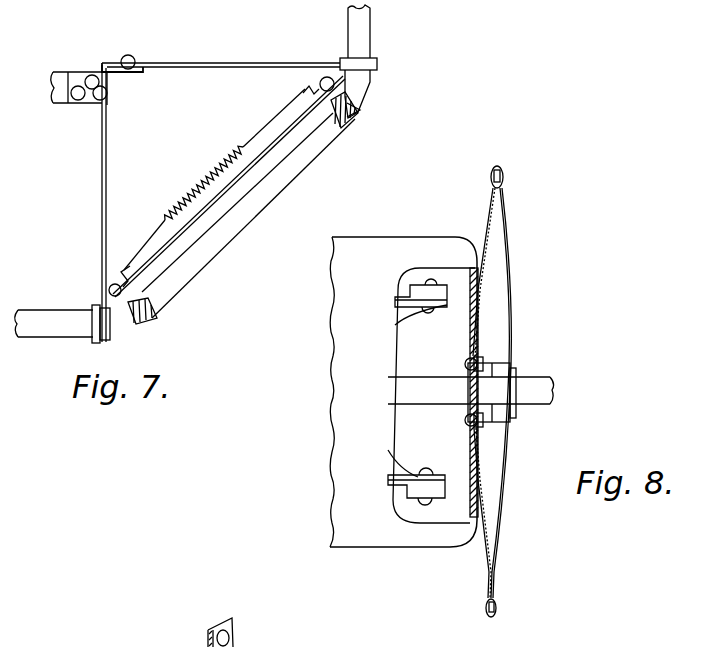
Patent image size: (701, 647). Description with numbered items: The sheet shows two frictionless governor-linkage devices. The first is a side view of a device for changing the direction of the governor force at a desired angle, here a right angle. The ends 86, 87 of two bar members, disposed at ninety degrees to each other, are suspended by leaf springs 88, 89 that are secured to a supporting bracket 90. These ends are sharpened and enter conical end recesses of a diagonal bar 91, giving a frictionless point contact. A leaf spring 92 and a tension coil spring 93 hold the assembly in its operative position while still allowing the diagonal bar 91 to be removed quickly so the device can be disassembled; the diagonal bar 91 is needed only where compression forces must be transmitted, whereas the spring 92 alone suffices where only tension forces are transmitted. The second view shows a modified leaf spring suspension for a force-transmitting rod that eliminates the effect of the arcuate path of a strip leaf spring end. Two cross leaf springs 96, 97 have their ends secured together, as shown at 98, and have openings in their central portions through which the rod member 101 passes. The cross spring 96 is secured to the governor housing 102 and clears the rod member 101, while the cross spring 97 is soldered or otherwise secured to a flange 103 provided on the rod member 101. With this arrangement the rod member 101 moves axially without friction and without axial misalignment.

In FIG. 7, the end of bar member 86 is at (120, 323).
In FIG. 7, the end of bar member 87 is at (360, 86).
In FIG. 7, the leaf spring 88 is at (102, 212).
In FIG. 7, the leaf spring 89 is at (220, 63).
In FIG. 7, the supporting bracket 90 is at (77, 72).
In FIG. 7, the diagonal bar 91 is at (289, 183).
In FIG. 7, the leaf spring 92 is at (203, 222).
In FIG. 7, the tension coil spring 93 is at (212, 170).
In FIG. 8, the cross leaf spring 96 is at (490, 243).
In FIG. 8, the cross leaf spring 97 is at (511, 320).
In FIG. 7, the secured ends of cross leaf springs 98 is at (230, 638).
In FIG. 8, the secured ends of cross leaf springs 98 is at (503, 173).
In FIG. 8, the rod member 101 is at (533, 380).
In FIG. 8, the governor housing 102 is at (470, 325).
In FIG. 8, the flange 103 is at (515, 418).